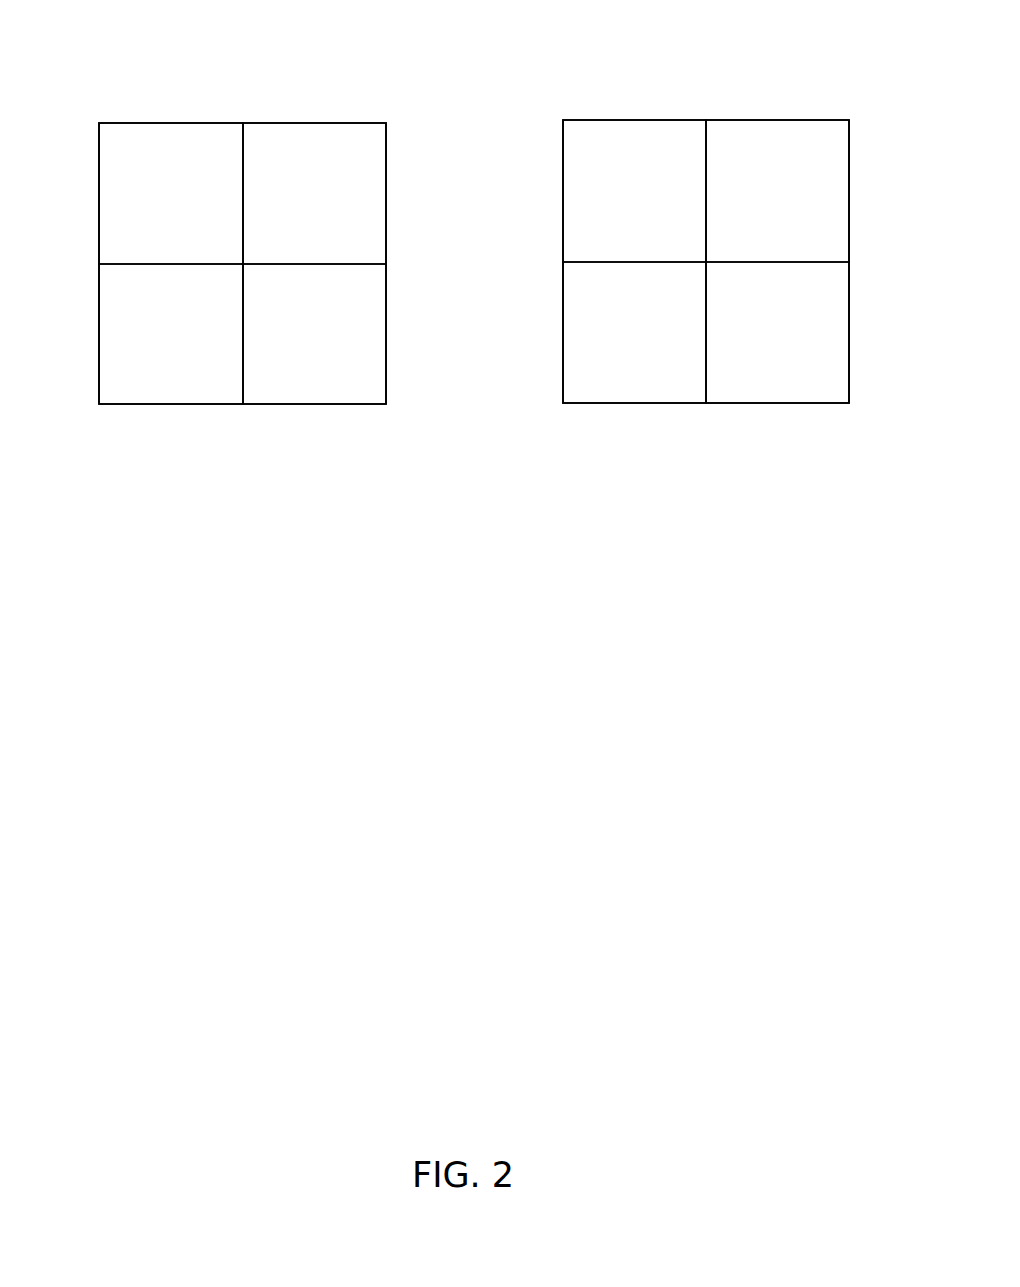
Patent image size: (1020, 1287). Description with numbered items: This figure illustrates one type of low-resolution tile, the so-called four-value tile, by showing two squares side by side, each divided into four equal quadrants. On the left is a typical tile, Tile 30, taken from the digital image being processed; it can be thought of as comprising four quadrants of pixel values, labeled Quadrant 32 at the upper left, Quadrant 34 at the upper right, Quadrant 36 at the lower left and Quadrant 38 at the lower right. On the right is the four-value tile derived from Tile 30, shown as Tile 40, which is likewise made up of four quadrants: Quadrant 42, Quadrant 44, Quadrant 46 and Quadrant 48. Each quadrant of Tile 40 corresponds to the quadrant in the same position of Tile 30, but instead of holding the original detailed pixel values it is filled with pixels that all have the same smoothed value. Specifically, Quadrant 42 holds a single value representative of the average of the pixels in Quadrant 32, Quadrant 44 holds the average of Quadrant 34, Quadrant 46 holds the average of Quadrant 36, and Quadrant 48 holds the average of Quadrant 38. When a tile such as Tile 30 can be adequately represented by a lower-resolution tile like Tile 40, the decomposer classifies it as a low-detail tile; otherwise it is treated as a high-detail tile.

The tile 30 is at (170, 122).
The quadrant 32 is at (135, 194).
The quadrant 34 is at (348, 228).
The quadrant 36 is at (135, 353).
The quadrant 38 is at (340, 352).
The four-value tile 40 is at (634, 120).
The quadrant 42 is at (598, 193).
The quadrant 44 is at (794, 209).
The quadrant 46 is at (634, 368).
The quadrant 48 is at (803, 315).